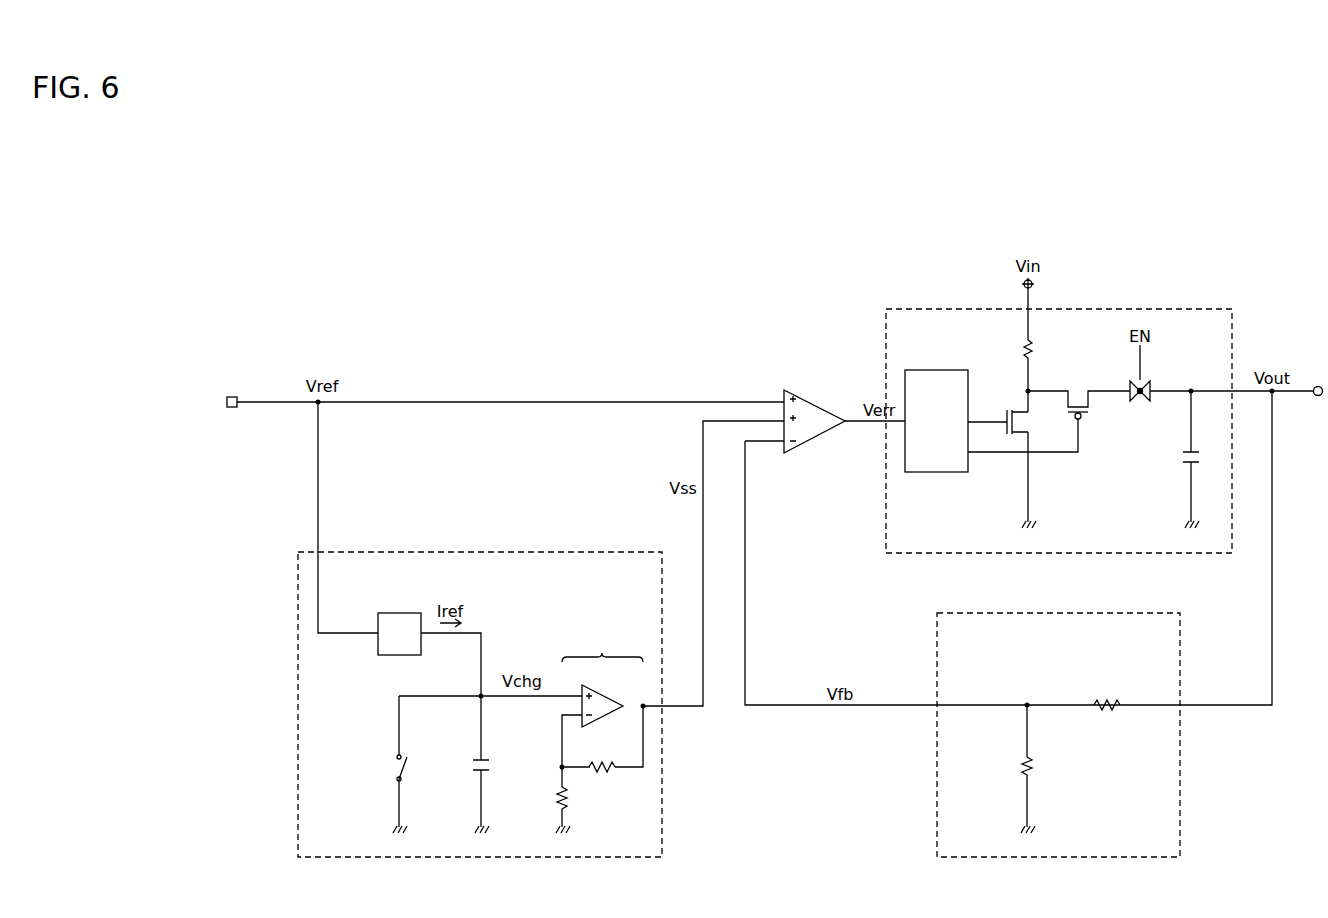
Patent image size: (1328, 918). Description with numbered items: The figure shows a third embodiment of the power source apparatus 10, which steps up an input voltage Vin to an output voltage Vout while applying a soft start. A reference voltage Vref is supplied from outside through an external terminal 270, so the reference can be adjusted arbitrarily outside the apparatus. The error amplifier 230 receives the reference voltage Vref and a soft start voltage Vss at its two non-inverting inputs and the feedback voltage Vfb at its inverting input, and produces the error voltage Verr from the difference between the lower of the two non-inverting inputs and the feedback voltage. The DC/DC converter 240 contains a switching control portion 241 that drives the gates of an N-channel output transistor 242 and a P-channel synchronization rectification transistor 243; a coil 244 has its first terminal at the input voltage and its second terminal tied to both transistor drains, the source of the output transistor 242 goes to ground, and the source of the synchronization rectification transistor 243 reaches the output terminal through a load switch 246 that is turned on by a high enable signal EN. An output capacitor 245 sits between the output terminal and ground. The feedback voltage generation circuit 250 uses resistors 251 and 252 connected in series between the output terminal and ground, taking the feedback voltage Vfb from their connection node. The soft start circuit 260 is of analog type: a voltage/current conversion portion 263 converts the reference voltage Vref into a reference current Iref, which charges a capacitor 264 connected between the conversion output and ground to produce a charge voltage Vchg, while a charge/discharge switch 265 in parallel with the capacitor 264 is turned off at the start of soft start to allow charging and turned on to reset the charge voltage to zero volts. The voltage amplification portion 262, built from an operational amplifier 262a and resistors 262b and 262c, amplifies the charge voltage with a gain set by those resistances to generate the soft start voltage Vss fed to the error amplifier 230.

The power source apparatus 10 is at (1282, 240).
The error amplifier 230 is at (813, 400).
The DC/DC converter 240 is at (1137, 309).
The switching control portion 241 is at (936, 370).
The output transistor 242 is at (1024, 424).
The synchronization rectification transistor 243 is at (1077, 389).
The coil 244 is at (1016, 350).
The output capacitor 245 is at (1178, 458).
The load switch 246 is at (1140, 405).
The feedback voltage generation circuit 250 is at (1058, 613).
The resistor 251 is at (1107, 697).
The resistor 252 is at (1036, 767).
The soft start circuit 260 is at (480, 552).
The voltage amplification portion 262 is at (601, 652).
The operational amplifier 262a is at (602, 693).
The resistor 262b is at (601, 757).
The resistor 262c is at (572, 798).
The voltage/current conversion portion 263 is at (399, 613).
The capacitor 264 is at (492, 767).
The charge/discharge switch 265 is at (409, 767).
The external terminal 270 is at (232, 396).